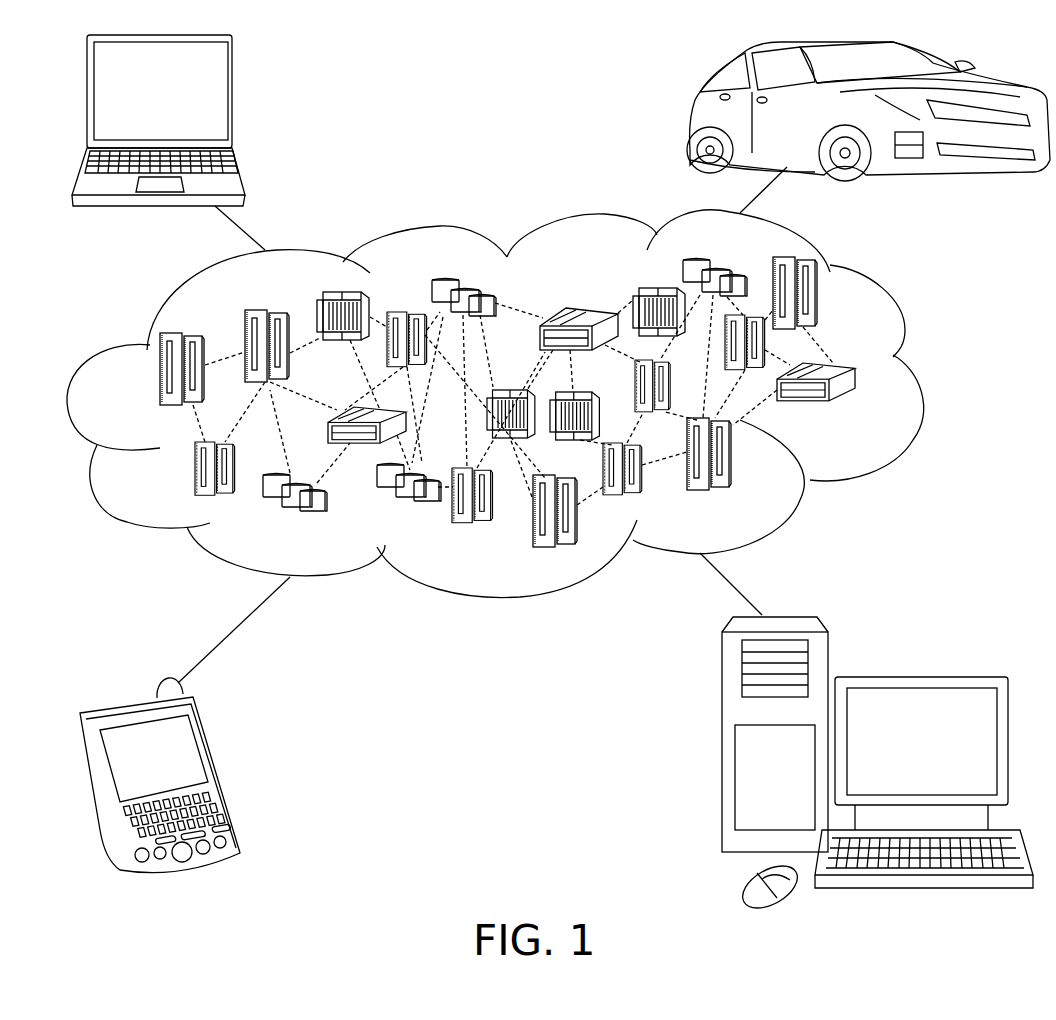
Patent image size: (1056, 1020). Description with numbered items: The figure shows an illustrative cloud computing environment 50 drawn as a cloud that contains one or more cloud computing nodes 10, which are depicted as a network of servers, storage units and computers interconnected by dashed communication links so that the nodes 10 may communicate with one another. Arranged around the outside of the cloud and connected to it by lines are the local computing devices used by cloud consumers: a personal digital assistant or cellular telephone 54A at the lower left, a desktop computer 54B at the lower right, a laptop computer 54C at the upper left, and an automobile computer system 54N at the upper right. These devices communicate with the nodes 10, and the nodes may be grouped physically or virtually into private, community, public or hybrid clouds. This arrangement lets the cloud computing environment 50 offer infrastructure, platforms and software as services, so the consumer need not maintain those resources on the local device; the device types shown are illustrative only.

The cloud computing node 10 is at (858, 410).
The cloud computing environment 50 is at (920, 378).
The personal digital assistant or cellular telephone 54A is at (219, 772).
The desktop computer 54B is at (917, 677).
The laptop computer 54C is at (232, 98).
The automobile computer system 54N is at (690, 116).